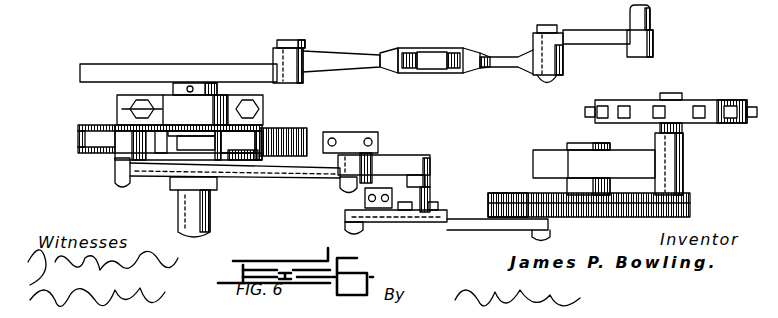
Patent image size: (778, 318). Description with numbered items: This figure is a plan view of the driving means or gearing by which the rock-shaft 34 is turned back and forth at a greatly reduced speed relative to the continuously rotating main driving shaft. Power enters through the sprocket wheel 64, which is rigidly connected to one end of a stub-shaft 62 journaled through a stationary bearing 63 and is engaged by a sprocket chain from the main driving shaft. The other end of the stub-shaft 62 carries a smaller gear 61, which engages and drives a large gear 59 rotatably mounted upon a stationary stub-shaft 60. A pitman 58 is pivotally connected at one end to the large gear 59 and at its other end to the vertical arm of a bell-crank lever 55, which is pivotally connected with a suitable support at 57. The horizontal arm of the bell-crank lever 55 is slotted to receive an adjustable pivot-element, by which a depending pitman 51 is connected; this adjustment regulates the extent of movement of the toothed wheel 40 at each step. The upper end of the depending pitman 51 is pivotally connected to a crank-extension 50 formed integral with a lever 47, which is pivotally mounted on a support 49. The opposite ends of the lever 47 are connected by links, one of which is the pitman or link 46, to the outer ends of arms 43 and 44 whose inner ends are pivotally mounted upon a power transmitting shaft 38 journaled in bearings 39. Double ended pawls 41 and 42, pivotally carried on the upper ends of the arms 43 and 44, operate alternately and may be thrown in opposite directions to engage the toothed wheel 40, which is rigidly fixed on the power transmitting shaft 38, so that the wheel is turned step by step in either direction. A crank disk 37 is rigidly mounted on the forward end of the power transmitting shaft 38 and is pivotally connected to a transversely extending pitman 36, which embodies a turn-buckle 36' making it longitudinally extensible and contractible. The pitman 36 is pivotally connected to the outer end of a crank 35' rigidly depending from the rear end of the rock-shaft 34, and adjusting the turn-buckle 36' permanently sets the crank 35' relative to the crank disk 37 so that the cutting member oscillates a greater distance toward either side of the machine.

The rock-shaft 34 is at (658, 14).
The crank 35' is at (555, 43).
The pitman 36 is at (391, 50).
The turn-buckle 36' is at (439, 47).
The crank disk 37 is at (118, 63).
The power transmitting shaft 38 is at (213, 228).
The bearings 39 is at (117, 108).
The toothed wheel 40 is at (80, 127).
The pawl 41 is at (197, 135).
The pawl 42 is at (78, 146).
The arm 43 is at (240, 161).
The arm 44 is at (123, 160).
The pitman or link 46 is at (302, 178).
The lever 47 is at (379, 156).
The support 49 is at (346, 133).
The crank-extension 50 is at (393, 160).
The depending pitman 51 is at (432, 180).
The bell-crank lever 55 is at (403, 222).
The pivotal connection 57 is at (350, 215).
The pitman 58 is at (462, 231).
The large gear 59 is at (503, 194).
The stationary stub-shaft 60 is at (568, 147).
The smaller gear 61 is at (692, 207).
The stub-shaft 62 is at (683, 134).
The stationary bearing 63 is at (657, 168).
The sprocket wheel 64 is at (714, 107).